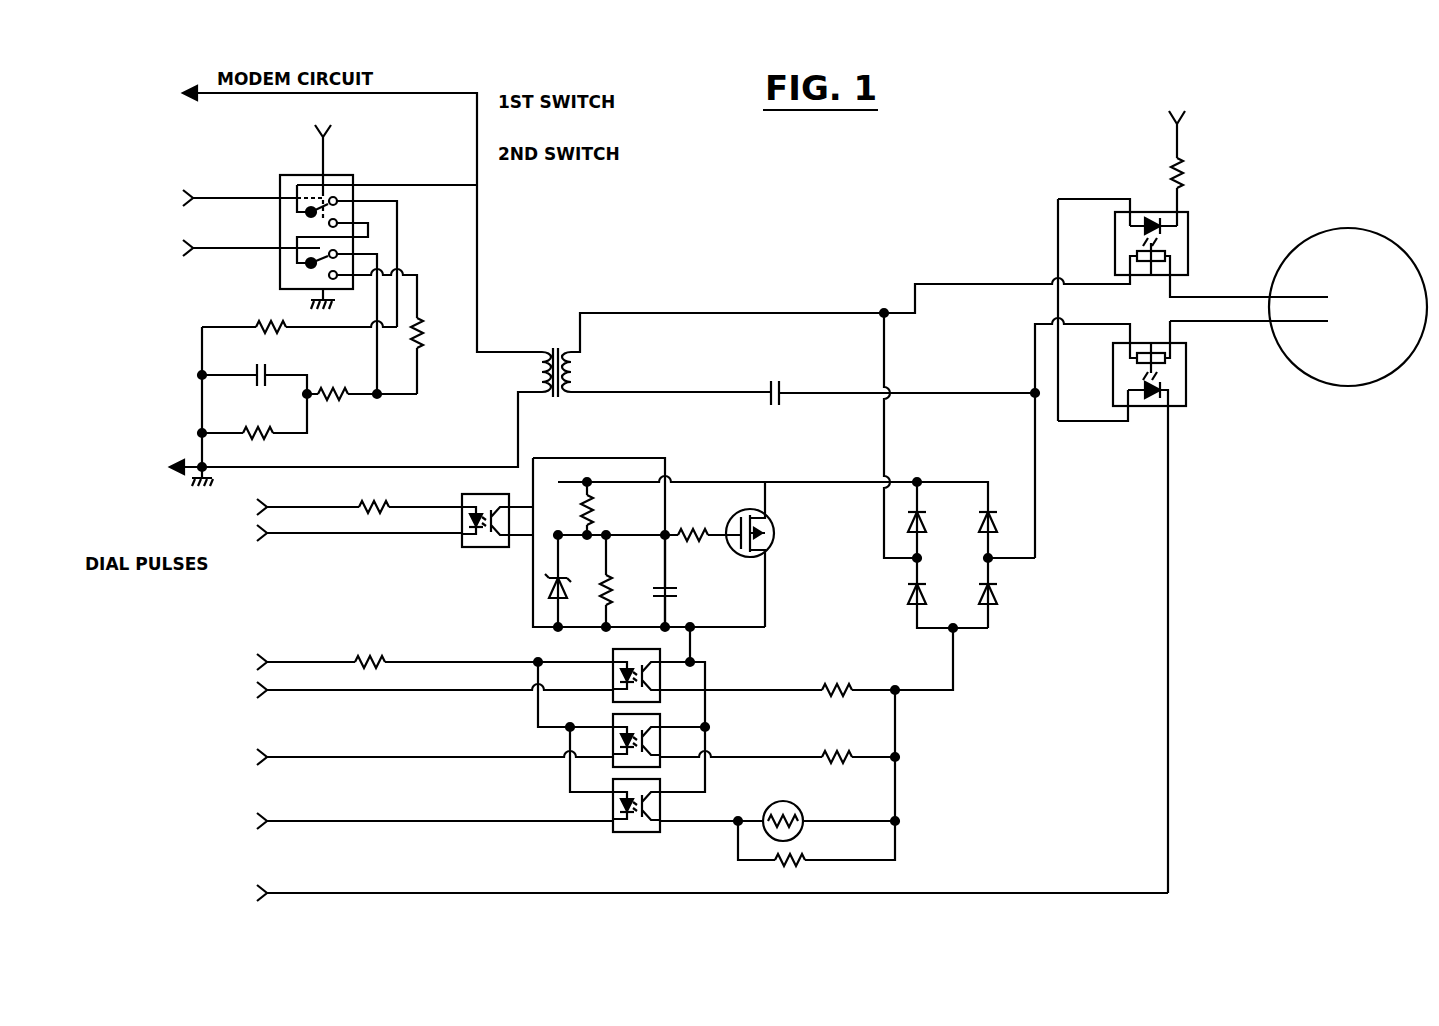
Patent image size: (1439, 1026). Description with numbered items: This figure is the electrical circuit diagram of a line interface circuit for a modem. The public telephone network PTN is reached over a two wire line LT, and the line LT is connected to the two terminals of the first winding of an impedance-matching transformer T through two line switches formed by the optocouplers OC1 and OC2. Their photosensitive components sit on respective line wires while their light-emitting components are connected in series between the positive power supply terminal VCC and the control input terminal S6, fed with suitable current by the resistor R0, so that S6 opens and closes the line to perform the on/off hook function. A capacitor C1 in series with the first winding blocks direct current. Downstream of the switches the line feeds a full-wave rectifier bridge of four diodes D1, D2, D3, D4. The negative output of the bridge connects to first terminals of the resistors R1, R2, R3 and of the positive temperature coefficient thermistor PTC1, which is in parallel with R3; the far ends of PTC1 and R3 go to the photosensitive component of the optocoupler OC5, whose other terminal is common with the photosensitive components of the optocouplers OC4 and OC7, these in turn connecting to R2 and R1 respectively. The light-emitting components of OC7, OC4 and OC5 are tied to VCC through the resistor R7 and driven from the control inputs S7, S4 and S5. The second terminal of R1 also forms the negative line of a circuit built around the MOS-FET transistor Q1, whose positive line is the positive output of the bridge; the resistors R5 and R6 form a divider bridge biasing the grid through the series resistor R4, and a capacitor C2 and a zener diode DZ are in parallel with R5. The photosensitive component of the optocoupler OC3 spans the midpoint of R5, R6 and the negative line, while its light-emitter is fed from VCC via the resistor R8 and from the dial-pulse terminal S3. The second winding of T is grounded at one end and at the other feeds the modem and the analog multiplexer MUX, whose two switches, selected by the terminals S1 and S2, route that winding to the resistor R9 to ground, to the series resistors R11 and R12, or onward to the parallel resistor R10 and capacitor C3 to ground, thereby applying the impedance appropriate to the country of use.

The analog multiplexer MUX is at (298, 174).
The control input terminal S1 is at (240, 188).
The control input terminal S2 is at (251, 238).
The control input terminal S3 is at (341, 534).
The control input S4 is at (417, 757).
The control input S5 is at (417, 822).
The control input terminal S6 is at (695, 894).
The control input S7 is at (417, 691).
The positive power supply terminal VCC is at (323, 148).
The resistor R0 is at (1187, 154).
The resistor R1 is at (882, 672).
The resistor R2 is at (855, 754).
The resistor R3 is at (816, 790).
The series resistor R4 is at (709, 523).
The resistor R5 is at (618, 581).
The resistor R6 is at (601, 508).
The resistor R7 is at (413, 713).
The resistor R8 is at (338, 500).
The resistor R9 is at (298, 382).
The resistor R10 is at (252, 432).
The resistor R11 is at (360, 391).
The resistor R12 is at (440, 356).
The capacitor C1 is at (903, 386).
The capacitor C2 is at (677, 581).
The capacitor C3 is at (254, 365).
The impedance-matching transformer T is at (701, 355).
The MOS-FET transistor Q1 is at (767, 554).
The zener diode DZ is at (565, 581).
The diode D1 is at (928, 520).
The diode D2 is at (970, 520).
The diode D3 is at (948, 593).
The diode D4 is at (1007, 593).
The optocoupler OC1 is at (1221, 277).
The optocoupler OC2 is at (1172, 618).
The optocoupler OC3 is at (494, 534).
The optocoupler OC4 is at (611, 722).
The optocoupler OC5 is at (660, 826).
The optocoupler OC7 is at (616, 650).
The positive temperature coefficient thermistor PTC1 is at (816, 816).
The public telephone network PTN is at (1338, 228).
The two wire line LT is at (1243, 320).